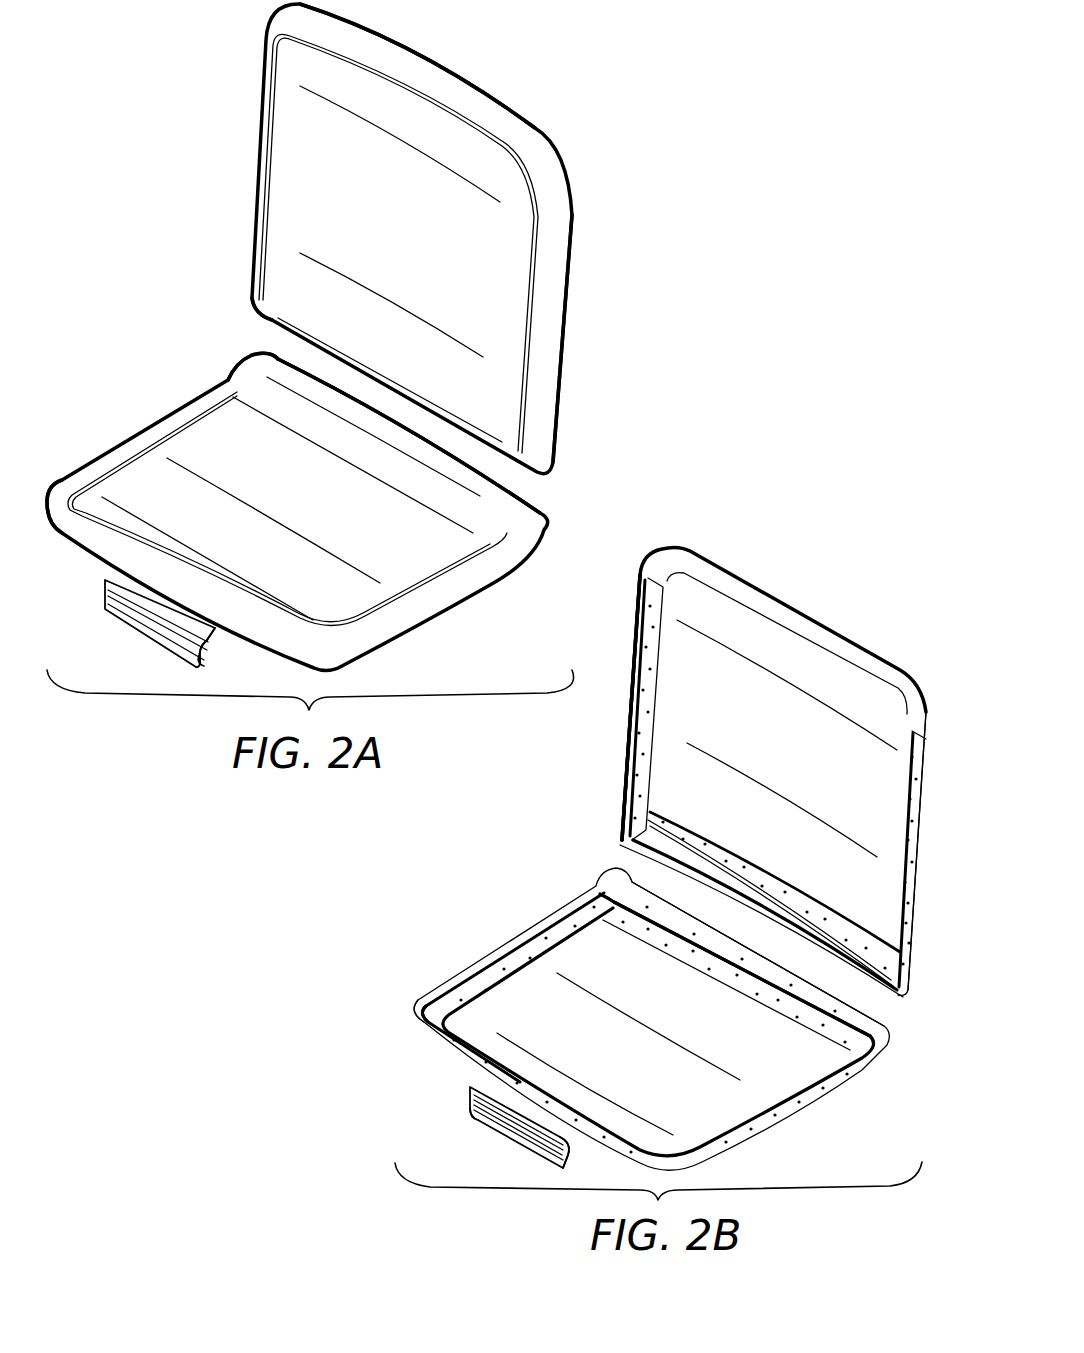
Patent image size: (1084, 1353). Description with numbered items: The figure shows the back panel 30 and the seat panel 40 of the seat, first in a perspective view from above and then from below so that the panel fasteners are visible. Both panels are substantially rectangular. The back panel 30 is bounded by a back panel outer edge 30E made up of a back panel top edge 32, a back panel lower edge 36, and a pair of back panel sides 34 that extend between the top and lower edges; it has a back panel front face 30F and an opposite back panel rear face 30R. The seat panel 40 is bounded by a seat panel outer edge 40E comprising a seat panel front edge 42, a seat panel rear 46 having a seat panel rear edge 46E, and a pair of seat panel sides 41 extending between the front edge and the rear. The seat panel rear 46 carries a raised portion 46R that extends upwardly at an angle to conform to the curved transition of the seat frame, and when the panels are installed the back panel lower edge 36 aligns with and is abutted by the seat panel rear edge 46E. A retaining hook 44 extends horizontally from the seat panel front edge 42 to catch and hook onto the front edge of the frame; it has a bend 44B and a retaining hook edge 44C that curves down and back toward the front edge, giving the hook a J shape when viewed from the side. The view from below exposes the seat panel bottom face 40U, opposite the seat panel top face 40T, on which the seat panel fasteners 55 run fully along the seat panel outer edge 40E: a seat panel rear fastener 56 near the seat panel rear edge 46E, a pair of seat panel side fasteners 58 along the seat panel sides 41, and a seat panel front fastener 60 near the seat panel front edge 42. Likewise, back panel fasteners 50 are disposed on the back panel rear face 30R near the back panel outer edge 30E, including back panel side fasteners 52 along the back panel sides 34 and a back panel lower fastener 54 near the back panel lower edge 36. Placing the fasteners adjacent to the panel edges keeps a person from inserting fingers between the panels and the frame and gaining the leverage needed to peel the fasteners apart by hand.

In FIG. 2A, the back panel 30 is at (290, 118).
In FIG. 2B, the back panel 30 is at (916, 695).
In FIG. 2A, the back panel top edge 32 is at (400, 43).
In FIG. 2A, the back panel sides 34 is at (258, 162).
In FIG. 2B, the back panel sides 34 is at (630, 697).
In FIG. 2A, the back panel front face 30F is at (338, 208).
In FIG. 2A, the back panel outer edge 30E is at (569, 244).
In FIG. 2B, the back panel outer edge 30E is at (627, 742).
In FIG. 2B, the back panel rear face 30R is at (787, 710).
In FIG. 2A, the back panel lower edge 36 is at (270, 323).
In FIG. 2B, the back panel lower edge 36 is at (630, 852).
In FIG. 2A, the seat panel 40 is at (143, 455).
In FIG. 2B, the seat panel 40 is at (862, 1068).
In FIG. 2A, the top surface of seat bottom 40T is at (195, 440).
In FIG. 2B, the seat panel bottom face 40U is at (800, 1058).
In FIG. 2B, the seat panel outer edge 40E is at (492, 966).
In FIG. 2A, the seat panel sides 41 is at (100, 460).
In FIG. 2B, the seat panel sides 41 is at (497, 945).
In FIG. 2A, the seat panel front edge 42 is at (90, 553).
In FIG. 2A, the retaining hook 44 is at (103, 598).
In FIG. 2B, the retaining hook 44 is at (468, 1104).
In FIG. 2A, the bend 44B is at (207, 652).
In FIG. 2B, the bend 44B is at (468, 1090).
In FIG. 2A, the retaining hook edge 44C is at (210, 660).
In FIG. 2B, the retaining hook edge 44C is at (563, 1160).
In FIG. 2A, the seat panel rear 46 is at (433, 443).
In FIG. 2A, the seat panel rear edge 46E is at (245, 343).
In FIG. 2B, the seat panel rear edge 46E is at (872, 1037).
In FIG. 2A, the raised portion 46R is at (250, 369).
In FIG. 2B, the back panel fasteners 50 is at (905, 963).
In FIG. 2B, the side flange of seat back 52 is at (645, 663).
In FIG. 2B, the back panel lower fastener 54 is at (878, 988).
In FIG. 2B, the seat panel fasteners 55 is at (425, 1010).
In FIG. 2B, the seat panel rear fastener 56 is at (672, 937).
In FIG. 2B, the seat panel side fasteners 58 is at (537, 938).
In FIG. 2B, the seat panel front fastener 60 is at (443, 1050).